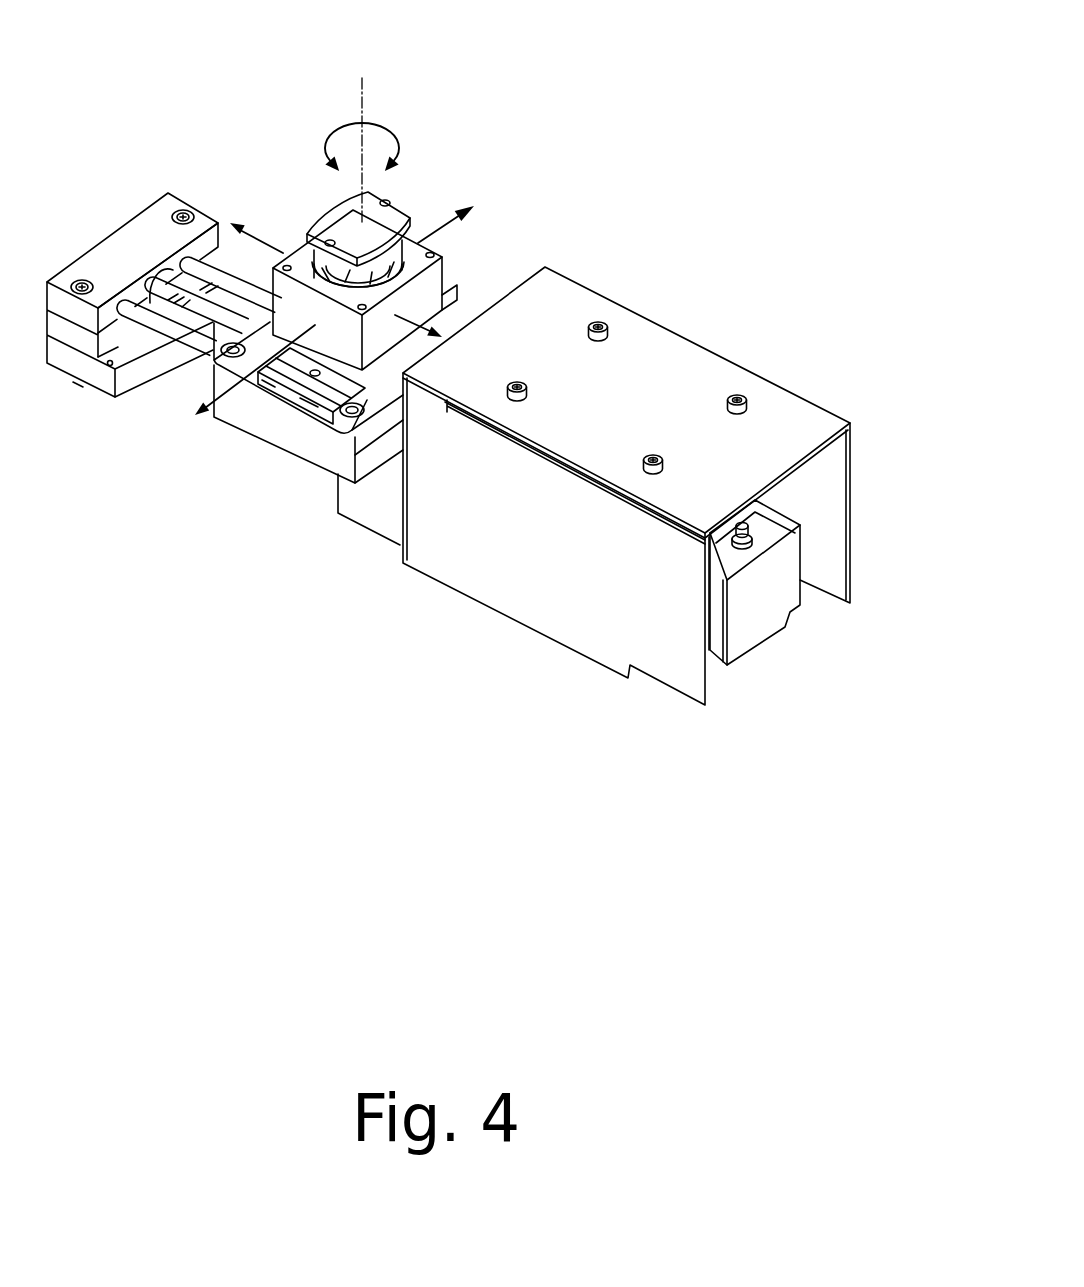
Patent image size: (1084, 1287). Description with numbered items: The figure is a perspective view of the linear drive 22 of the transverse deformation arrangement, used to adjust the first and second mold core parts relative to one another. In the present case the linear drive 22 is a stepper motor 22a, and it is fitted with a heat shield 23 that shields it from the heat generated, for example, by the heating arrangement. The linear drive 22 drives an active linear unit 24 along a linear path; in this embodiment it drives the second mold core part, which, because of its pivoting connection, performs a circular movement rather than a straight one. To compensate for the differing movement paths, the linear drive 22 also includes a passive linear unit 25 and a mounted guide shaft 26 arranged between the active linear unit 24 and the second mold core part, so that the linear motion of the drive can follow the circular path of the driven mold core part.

The linear drive 22 is at (612, 253).
The stepper motor 22a is at (612, 253).
The heat shield 23 is at (687, 373).
The active linear unit 24 is at (285, 438).
The passive linear unit 25 is at (288, 382).
The mounted guide shaft 26 is at (390, 215).